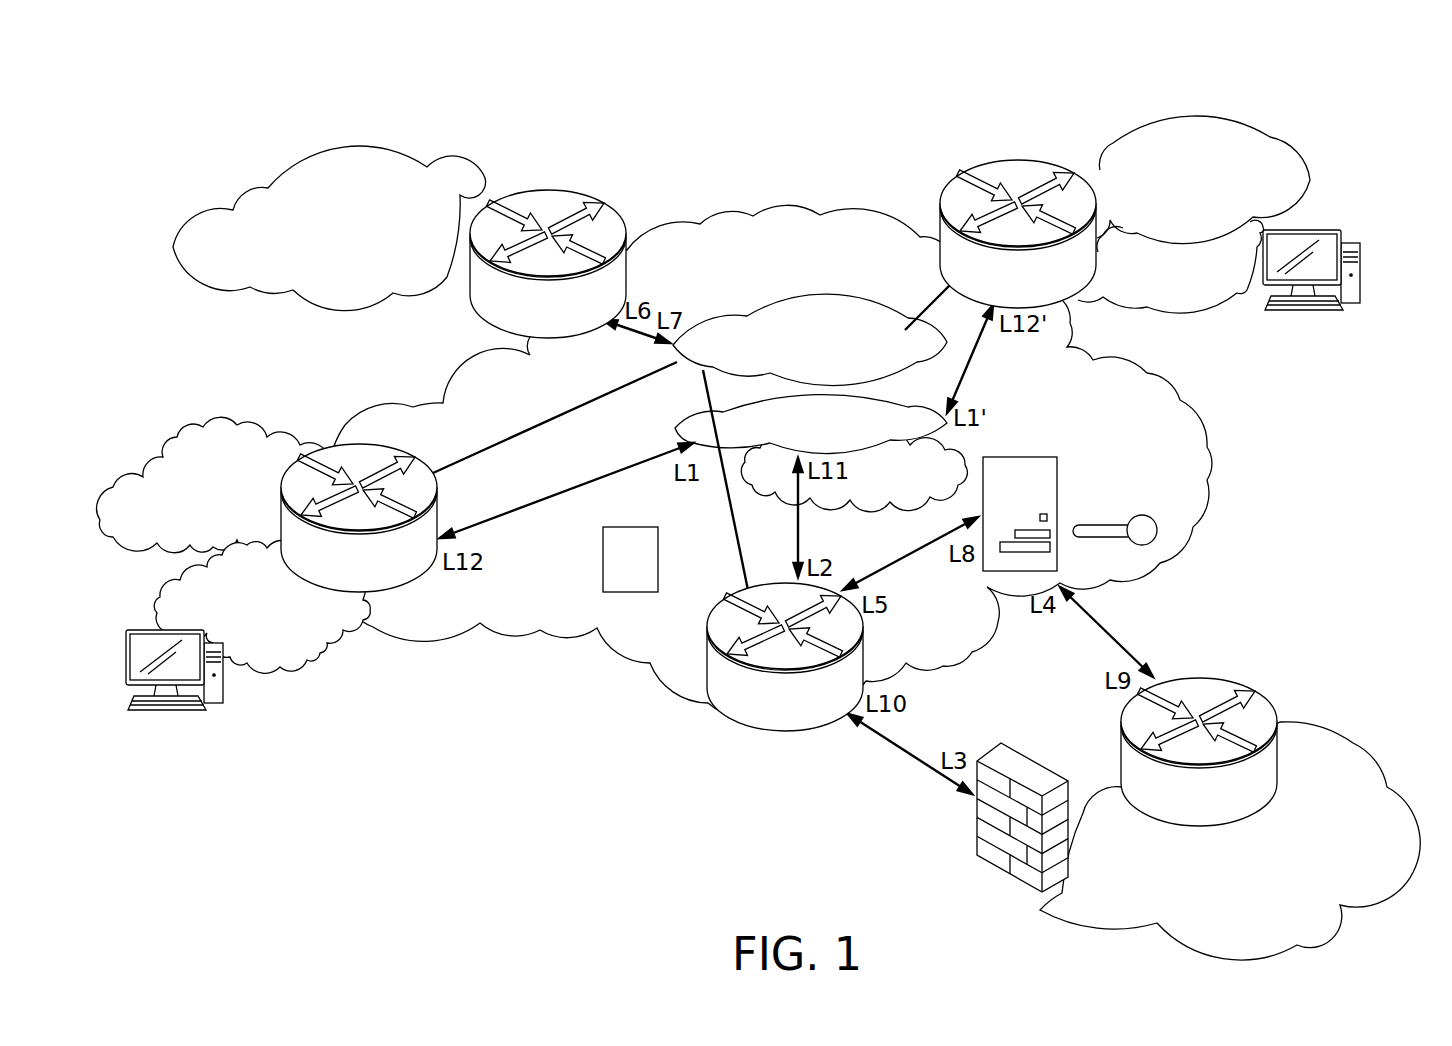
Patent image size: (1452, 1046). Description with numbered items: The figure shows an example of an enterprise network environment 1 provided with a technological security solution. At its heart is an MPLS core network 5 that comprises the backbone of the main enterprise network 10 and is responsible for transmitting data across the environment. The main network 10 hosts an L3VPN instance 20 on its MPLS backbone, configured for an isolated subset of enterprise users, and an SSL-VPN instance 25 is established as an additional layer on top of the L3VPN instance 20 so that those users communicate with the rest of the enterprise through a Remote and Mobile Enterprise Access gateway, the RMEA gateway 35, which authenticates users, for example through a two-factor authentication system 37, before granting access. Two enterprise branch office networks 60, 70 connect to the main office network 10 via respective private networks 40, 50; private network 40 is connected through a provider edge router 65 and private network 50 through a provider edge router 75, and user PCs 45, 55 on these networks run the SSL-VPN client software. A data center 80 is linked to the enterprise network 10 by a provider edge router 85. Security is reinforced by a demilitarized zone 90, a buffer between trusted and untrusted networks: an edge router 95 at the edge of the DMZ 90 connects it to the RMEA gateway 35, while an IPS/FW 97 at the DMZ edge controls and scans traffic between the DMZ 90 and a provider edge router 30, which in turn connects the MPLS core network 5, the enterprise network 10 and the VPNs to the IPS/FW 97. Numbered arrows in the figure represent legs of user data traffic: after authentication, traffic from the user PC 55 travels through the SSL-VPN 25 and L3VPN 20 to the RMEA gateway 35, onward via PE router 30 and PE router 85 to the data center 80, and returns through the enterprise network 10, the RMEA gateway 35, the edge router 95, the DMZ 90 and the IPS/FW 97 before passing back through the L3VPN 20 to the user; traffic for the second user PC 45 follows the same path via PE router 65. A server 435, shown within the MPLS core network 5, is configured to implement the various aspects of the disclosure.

The enterprise network environment 1 is at (1390, 82).
The MPLS core network 5 is at (752, 217).
The main enterprise network 10 is at (710, 293).
The L3VPN instance 20 is at (910, 400).
The SSL-VPN instance 25 is at (898, 493).
The provider edge router 30 is at (730, 600).
The RMEA gateway 35 is at (1060, 510).
The two-factor authentication system 37 is at (1160, 527).
The private network PN1 40 is at (1300, 215).
The user PC 45 is at (1348, 307).
The private network PN2 50 is at (276, 663).
The user PC 55 is at (183, 670).
The enterprise branch office network 60 is at (1280, 147).
The provider edge router 65 is at (940, 193).
The enterprise branch office network 70 is at (208, 426).
The provider edge router 75 is at (370, 444).
The data center 80 is at (317, 168).
The provider edge router 85 is at (617, 210).
The demilitarized zone 90 is at (1390, 803).
The edge router 95 is at (1210, 677).
The IPS/FW 97 is at (1031, 752).
The server 435 is at (609, 577).